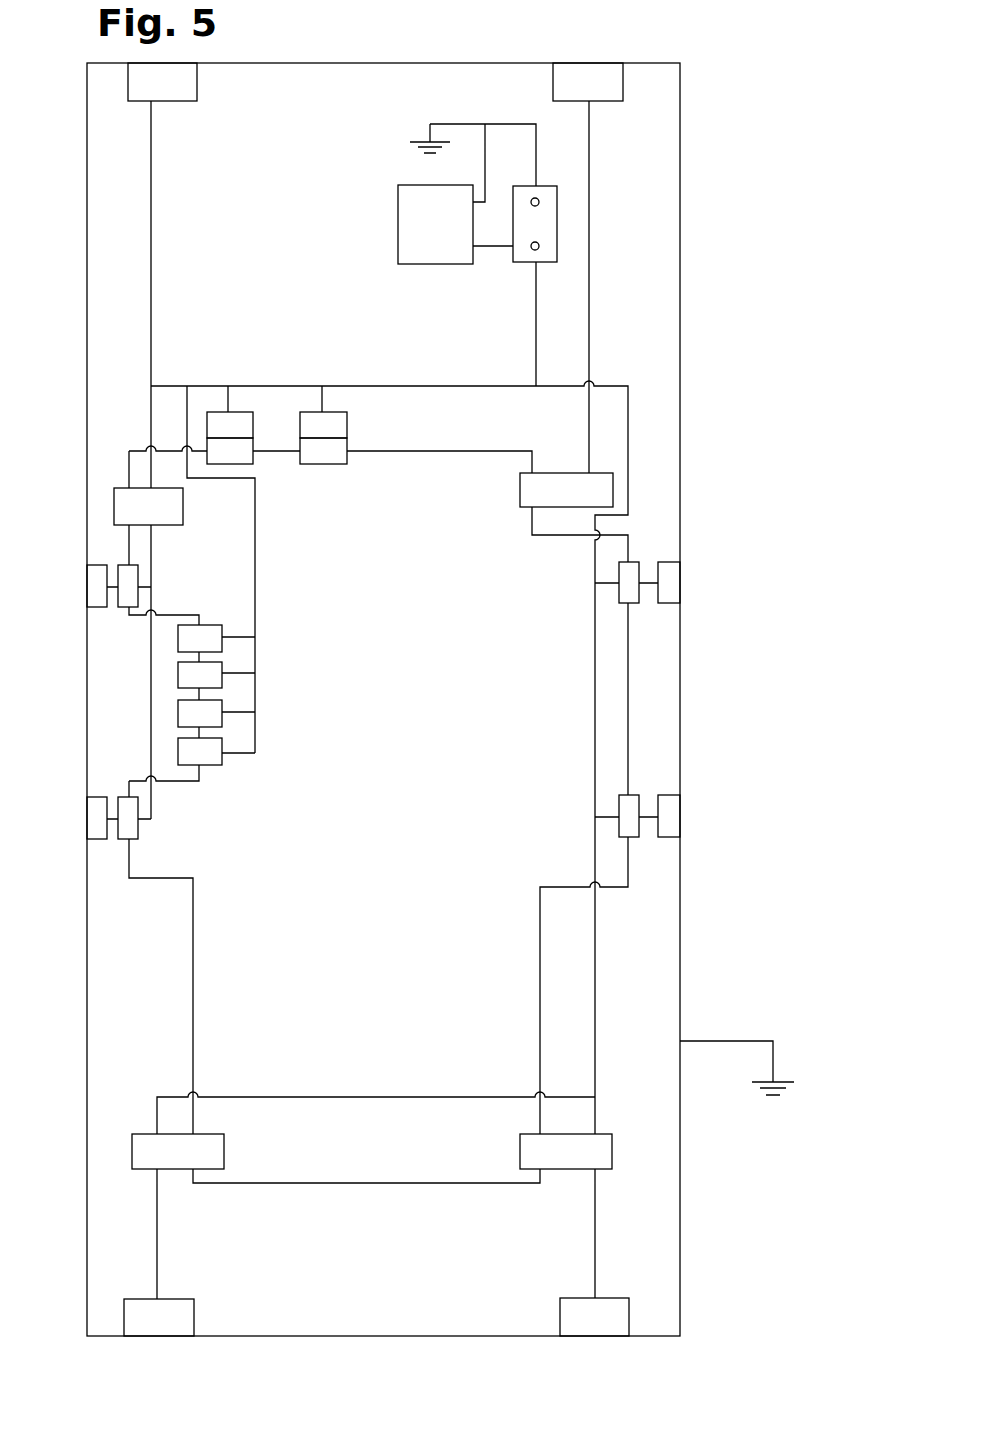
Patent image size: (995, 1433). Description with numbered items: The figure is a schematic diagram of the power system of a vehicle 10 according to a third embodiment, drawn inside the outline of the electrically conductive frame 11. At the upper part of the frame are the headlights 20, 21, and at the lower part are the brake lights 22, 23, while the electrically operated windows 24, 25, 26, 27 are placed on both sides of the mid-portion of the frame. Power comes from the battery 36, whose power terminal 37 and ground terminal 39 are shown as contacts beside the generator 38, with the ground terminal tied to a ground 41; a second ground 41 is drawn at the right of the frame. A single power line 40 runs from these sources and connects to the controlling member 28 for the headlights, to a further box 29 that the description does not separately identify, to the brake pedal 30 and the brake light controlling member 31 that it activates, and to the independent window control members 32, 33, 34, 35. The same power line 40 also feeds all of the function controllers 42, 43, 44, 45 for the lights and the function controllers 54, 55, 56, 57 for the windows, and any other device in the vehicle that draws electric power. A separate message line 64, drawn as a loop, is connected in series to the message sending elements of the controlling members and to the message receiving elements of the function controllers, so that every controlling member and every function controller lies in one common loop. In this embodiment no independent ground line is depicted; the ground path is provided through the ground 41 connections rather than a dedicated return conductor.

The vehicle 10 is at (756, 190).
The electrically conductive frame 11 is at (738, 362).
The headlight 20 is at (146, 95).
The headlight 21 is at (572, 95).
The brake light 22 is at (143, 1330).
The brake light 23 is at (578, 1330).
The electrically operated window 24 is at (89, 585).
The electrically operated window 25 is at (673, 578).
The electrically operated window 26 is at (89, 812).
The electrically operated window 27 is at (673, 806).
The controlling member 28 is at (216, 436).
The second control element 29 is at (216, 462).
The brake pedal 30 is at (309, 462).
The brake light controlling member 31 is at (309, 436).
The window control member 32 is at (186, 648).
The window control member 33 is at (186, 685).
The window control member 34 is at (186, 723).
The window control member 35 is at (186, 761).
The battery 36 is at (548, 262).
The power terminal 37 is at (540, 246).
The generator 38 is at (419, 235).
The ground terminal 39 is at (540, 202).
The power line 40 is at (365, 386).
The ground 41 is at (430, 124).
The function controller 42 is at (132, 517).
The function controller 43 is at (550, 500).
The function controller 44 is at (162, 1161).
The function controller 45 is at (550, 1161).
The function controller 54 is at (122, 606).
The function controller 55 is at (632, 600).
The function controller 56 is at (122, 840).
The function controller 57 is at (632, 832).
The message line 64 is at (500, 451).